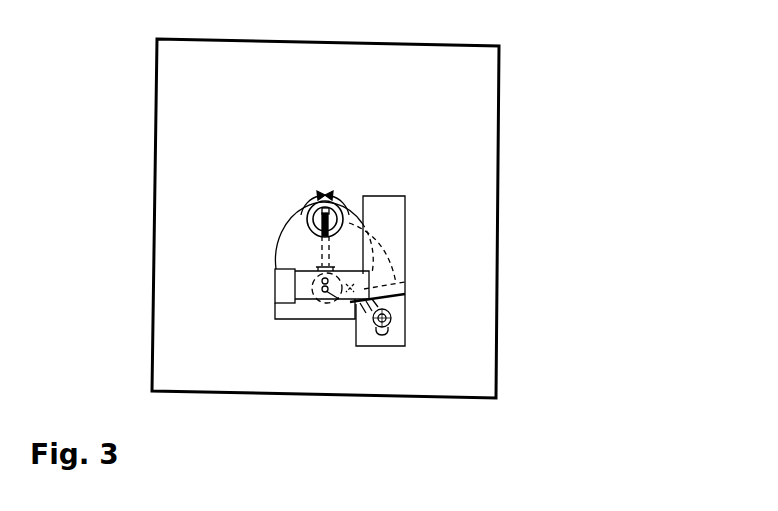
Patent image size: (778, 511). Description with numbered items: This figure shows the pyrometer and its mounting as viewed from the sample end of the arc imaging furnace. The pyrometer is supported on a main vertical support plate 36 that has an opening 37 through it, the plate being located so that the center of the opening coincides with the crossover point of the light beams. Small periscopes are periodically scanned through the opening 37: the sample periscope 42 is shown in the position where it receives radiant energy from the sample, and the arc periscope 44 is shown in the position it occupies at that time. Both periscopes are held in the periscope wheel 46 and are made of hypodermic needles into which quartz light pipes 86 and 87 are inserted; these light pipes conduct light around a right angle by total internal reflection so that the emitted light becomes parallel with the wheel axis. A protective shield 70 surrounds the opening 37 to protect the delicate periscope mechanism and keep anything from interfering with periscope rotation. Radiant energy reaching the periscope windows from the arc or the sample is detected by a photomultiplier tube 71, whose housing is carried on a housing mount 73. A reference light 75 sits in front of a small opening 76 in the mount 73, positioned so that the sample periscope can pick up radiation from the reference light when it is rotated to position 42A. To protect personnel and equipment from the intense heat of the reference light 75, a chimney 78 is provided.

The main vertical support plate 36 is at (461, 93).
The opening 37 is at (323, 202).
The sample periscope 42 is at (305, 217).
The sample periscope position 42A is at (343, 323).
The arc periscope 44 is at (404, 281).
The periscope wheel 46 is at (297, 300).
The protective shield 70 is at (290, 246).
The photomultiplier tube 71 is at (287, 287).
The housing mount 73 is at (280, 310).
The reference light 75 is at (388, 330).
The small opening 76 is at (390, 313).
The chimney 78 is at (390, 218).
The quartz light pipe 86 is at (333, 300).
The quartz light pipe 87 is at (317, 300).